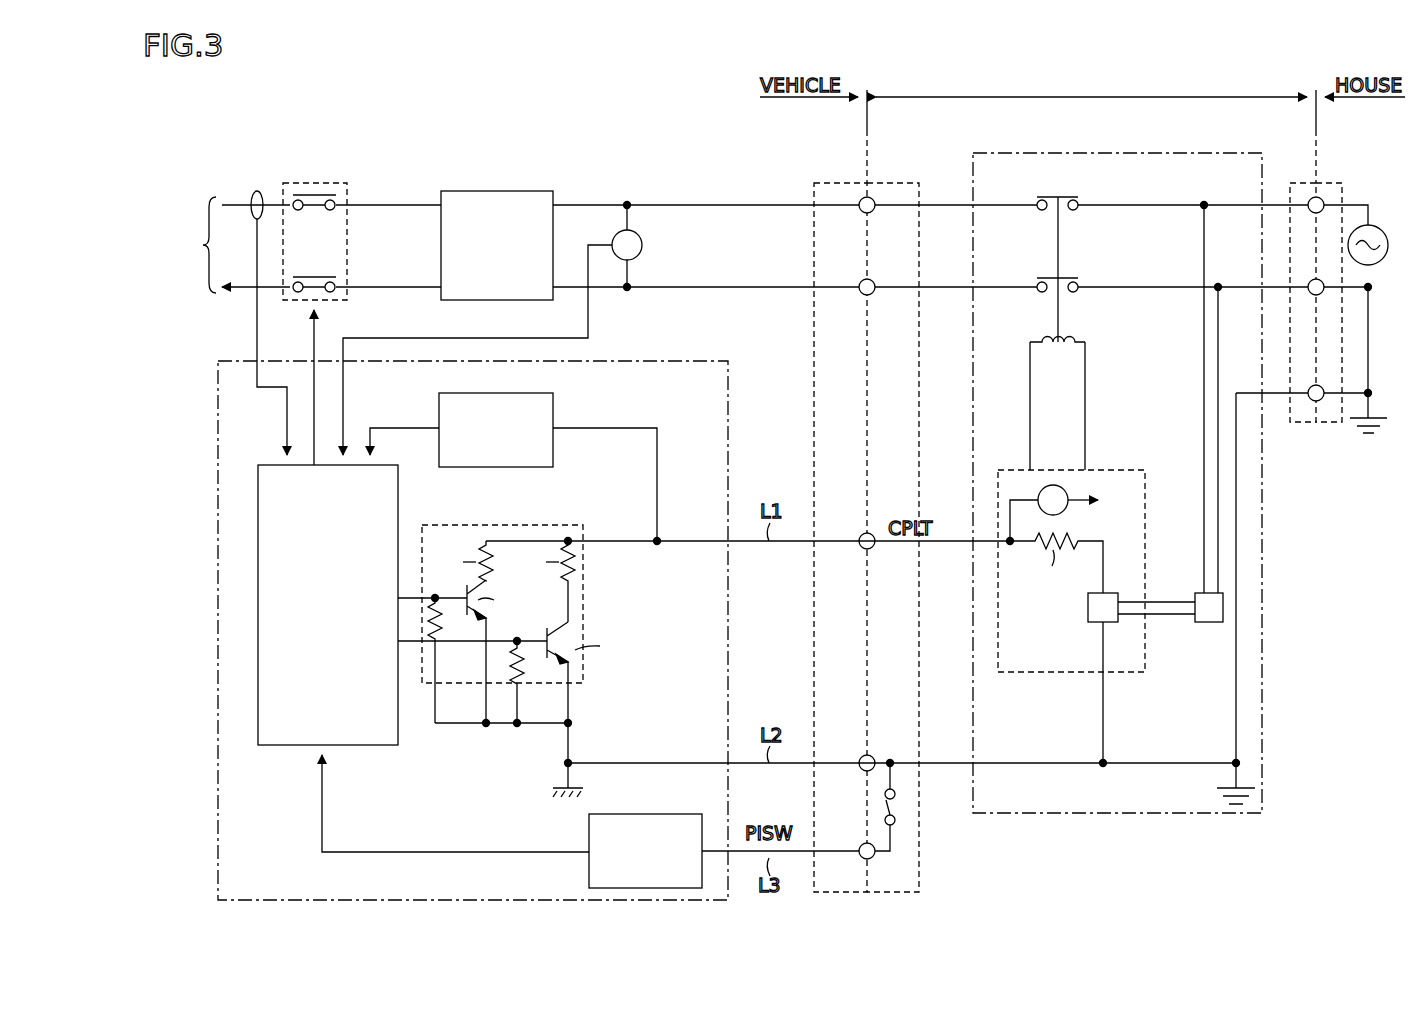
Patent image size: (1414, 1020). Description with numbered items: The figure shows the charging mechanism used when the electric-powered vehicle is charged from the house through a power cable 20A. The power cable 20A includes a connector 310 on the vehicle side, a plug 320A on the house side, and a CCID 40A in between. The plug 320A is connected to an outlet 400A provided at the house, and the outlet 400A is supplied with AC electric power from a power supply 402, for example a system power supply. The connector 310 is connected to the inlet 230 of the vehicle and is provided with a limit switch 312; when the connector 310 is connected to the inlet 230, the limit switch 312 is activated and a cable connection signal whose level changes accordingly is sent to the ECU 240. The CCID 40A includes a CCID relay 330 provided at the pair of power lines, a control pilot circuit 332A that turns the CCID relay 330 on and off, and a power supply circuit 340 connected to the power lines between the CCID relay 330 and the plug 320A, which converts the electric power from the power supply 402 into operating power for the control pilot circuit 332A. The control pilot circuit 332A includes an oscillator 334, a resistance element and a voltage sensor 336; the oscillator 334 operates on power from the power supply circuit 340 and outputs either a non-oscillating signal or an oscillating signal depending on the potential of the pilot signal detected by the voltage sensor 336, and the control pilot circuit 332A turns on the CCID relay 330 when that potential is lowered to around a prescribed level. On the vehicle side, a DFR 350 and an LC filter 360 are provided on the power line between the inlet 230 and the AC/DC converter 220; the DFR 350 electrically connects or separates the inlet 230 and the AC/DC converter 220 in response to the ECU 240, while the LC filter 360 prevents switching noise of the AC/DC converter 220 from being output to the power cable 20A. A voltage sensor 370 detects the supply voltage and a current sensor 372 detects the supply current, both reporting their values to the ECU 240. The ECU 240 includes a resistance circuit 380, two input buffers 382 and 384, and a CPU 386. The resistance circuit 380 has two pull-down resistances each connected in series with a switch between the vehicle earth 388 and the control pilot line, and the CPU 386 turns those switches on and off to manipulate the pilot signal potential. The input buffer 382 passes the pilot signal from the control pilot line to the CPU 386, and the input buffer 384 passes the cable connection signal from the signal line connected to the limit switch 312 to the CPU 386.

The AC/DC converter 220 is at (178, 245).
The power cable 20A is at (1082, 128).
The current sensor 372 is at (255, 192).
The DFR 350 is at (347, 237).
The LC filter 360 is at (483, 191).
The voltage sensor 370 is at (643, 246).
The inlet 230 is at (832, 183).
The connector 310 is at (895, 183).
The CCID 40A is at (1165, 153).
The CCID relay 330 is at (1058, 186).
The control pilot circuit 332A is at (1124, 470).
The voltage sensor 336 is at (1066, 512).
The oscillator 334 is at (1110, 593).
The power supply circuit 340 is at (1210, 622).
The plug 320A is at (1300, 183).
The outlet 400A is at (1332, 183).
The power supply 402 is at (1380, 224).
The ECU 240 is at (684, 361).
The CPU 386 is at (278, 745).
The input buffer 382 is at (480, 393).
The resistance circuit 380 is at (504, 525).
The vehicle earth 388 is at (561, 800).
The limit switch 312 is at (897, 808).
The input buffer 384 is at (640, 814).